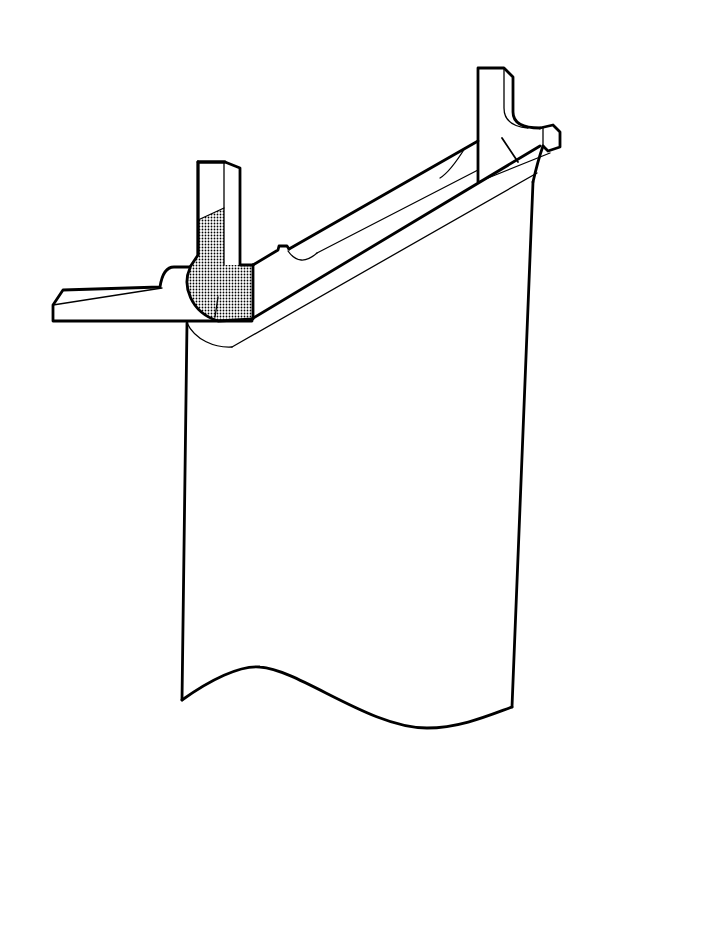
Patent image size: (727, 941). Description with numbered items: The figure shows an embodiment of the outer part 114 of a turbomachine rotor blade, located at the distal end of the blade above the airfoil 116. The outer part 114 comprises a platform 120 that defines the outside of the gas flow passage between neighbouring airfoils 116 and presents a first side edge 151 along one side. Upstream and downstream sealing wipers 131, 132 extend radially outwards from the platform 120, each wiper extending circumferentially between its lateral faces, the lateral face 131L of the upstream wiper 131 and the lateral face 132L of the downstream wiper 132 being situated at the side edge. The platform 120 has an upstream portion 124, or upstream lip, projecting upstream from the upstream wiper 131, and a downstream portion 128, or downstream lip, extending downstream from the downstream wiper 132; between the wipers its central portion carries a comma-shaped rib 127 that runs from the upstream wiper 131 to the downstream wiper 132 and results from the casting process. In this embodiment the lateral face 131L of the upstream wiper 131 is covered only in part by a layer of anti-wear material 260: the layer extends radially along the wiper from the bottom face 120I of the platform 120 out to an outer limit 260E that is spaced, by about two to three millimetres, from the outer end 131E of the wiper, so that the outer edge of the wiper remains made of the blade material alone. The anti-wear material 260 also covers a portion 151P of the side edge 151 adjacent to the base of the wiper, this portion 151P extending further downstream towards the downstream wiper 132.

The outer part 114 is at (388, 100).
The airfoil 116 is at (513, 333).
The platform 120 is at (365, 213).
The bottom face of the platform 120I is at (385, 238).
The upstream portion 124 is at (98, 295).
The comma-shaped rib 127 is at (403, 183).
The downstream portion 128 is at (545, 124).
The upstream wiper 131 is at (230, 177).
The outer end of the upstream wiper 131E is at (213, 160).
The lateral face of the upstream wiper 131L is at (207, 197).
The downstream wiper 132 is at (486, 68).
The lateral face of the downstream wiper 132L is at (537, 172).
The first side edge 151 is at (280, 278).
The portion of the side edge 151P is at (235, 350).
The anti-wear material 260 is at (200, 253).
The outer limit of the anti-wear material 260E is at (215, 213).